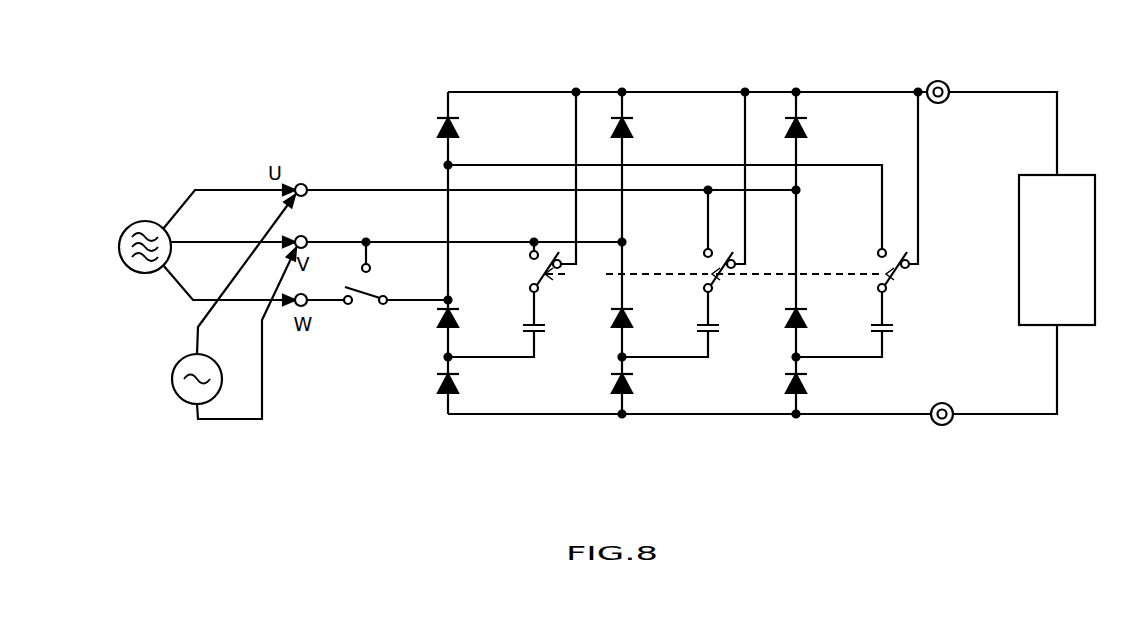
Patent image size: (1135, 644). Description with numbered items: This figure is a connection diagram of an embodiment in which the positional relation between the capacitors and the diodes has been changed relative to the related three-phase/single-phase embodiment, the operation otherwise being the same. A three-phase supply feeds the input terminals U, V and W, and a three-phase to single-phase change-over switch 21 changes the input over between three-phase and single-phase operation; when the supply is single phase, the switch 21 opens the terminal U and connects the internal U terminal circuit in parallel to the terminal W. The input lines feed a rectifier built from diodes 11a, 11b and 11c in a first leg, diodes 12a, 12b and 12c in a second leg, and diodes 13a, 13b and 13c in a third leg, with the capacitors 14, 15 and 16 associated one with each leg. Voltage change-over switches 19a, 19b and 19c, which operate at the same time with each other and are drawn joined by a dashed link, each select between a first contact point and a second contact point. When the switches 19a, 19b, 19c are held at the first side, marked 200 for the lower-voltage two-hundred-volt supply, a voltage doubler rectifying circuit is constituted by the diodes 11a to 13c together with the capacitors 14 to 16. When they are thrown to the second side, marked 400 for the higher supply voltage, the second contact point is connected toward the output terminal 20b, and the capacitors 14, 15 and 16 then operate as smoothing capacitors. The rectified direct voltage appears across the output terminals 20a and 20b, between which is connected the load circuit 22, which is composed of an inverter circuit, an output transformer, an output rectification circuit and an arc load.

The diode 11a is at (440, 133).
The diode 11b is at (440, 323).
The diode 11c is at (440, 393).
The diode 12a is at (632, 130).
The diode 12b is at (630, 327).
The diode 12c is at (630, 387).
The diode 13a is at (808, 130).
The diode 13b is at (803, 317).
The diode 13c is at (803, 383).
The capacitor 14 is at (540, 333).
The capacitor 15 is at (717, 337).
The capacitor 16 is at (892, 328).
The voltage change-over switch 19a is at (546, 282).
The voltage change-over switch 19b is at (714, 282).
The voltage change-over switch 19c is at (889, 282).
The DC output terminal 20a is at (946, 79).
The output terminal 20b is at (937, 427).
The three-phase to single-phase change-over switch 21 is at (338, 252).
The load circuit 22 is at (1072, 182).
The AC input bus lines 200 is at (551, 216).
The switch interlock link 400 is at (592, 266).